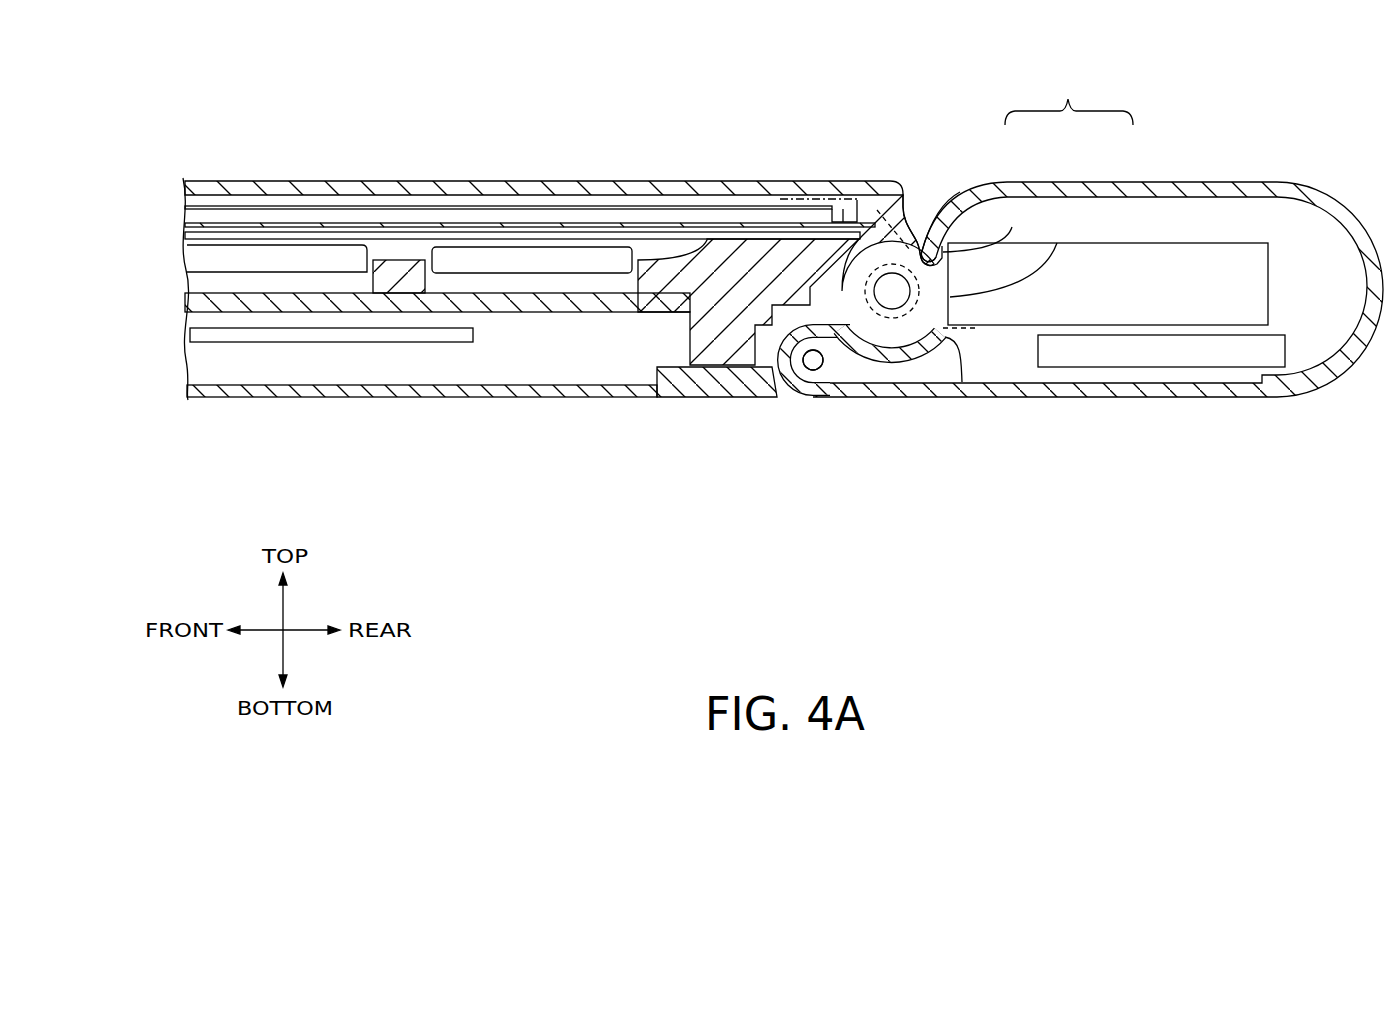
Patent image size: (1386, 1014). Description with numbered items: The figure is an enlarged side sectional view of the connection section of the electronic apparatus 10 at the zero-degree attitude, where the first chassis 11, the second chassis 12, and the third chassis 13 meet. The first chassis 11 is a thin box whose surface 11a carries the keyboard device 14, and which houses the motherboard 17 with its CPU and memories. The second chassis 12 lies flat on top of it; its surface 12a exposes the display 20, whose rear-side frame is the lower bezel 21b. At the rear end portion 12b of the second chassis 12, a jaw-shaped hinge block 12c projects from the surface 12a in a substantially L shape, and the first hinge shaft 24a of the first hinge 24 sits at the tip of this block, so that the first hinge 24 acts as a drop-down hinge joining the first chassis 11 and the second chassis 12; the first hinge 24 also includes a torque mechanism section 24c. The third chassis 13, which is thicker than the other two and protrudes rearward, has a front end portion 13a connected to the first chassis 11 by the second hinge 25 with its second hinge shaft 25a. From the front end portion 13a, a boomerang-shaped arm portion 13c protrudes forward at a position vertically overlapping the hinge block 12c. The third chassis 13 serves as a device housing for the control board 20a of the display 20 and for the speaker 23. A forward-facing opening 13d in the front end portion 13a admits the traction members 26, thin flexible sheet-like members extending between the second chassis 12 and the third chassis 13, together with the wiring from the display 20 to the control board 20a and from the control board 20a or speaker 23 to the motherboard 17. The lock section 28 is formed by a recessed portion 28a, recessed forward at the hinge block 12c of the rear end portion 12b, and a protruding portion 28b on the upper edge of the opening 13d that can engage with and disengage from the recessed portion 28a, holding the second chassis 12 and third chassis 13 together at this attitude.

The electronic apparatus 10 is at (257, 50).
The first chassis 11 is at (387, 420).
The surface 11a is at (243, 240).
The second chassis 12 is at (378, 157).
The surface 12a is at (458, 258).
The rear end portion 12b is at (913, 237).
The hinge block 12c is at (858, 315).
The third chassis 13 is at (1243, 168).
The front end portion 13a is at (933, 228).
The arm portion 13c is at (786, 362).
The opening 13d is at (962, 382).
The keyboard device 14 is at (280, 293).
The motherboard 17 is at (333, 342).
The display 20 is at (325, 218).
The control board 20a is at (1163, 350).
The lower bezel 21b is at (835, 232).
The speaker 23 is at (1190, 263).
The first hinge 24 is at (911, 381).
The first hinge shaft 24a is at (892, 297).
The torque mechanism section 24c is at (910, 358).
The second hinge 25 is at (824, 424).
The second hinge shaft 25a is at (813, 362).
The traction member 26 is at (962, 328).
The lock section 28 is at (1069, 95).
The recessed portion 28a is at (1012, 227).
The protruding portion 28b is at (1057, 243).